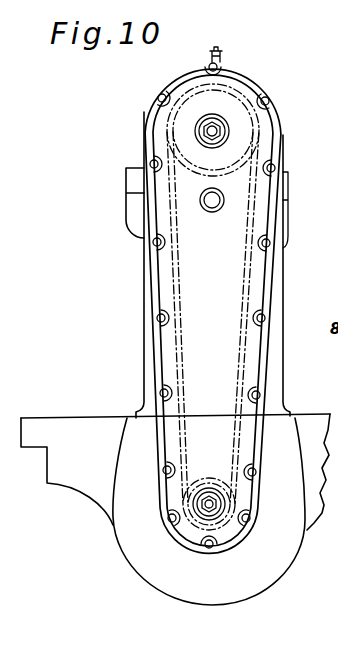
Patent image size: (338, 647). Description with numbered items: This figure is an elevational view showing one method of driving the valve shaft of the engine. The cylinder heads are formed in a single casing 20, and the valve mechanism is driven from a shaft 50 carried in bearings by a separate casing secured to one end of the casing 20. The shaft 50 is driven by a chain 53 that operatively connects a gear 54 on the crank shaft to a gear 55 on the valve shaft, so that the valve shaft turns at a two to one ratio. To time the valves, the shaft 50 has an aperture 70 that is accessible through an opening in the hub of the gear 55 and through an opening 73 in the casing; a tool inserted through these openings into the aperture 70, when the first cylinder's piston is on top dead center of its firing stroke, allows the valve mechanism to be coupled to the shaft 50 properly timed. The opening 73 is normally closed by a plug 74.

The casing 20 is at (284, 180).
The valve shaft 50 is at (211, 140).
The chain 53 is at (255, 228).
The gear on crank shaft 54 is at (208, 486).
The gear on valve shaft 55 is at (257, 133).
The aperture 70 is at (198, 127).
The opening 73 is at (223, 63).
The plug 74 is at (218, 50).